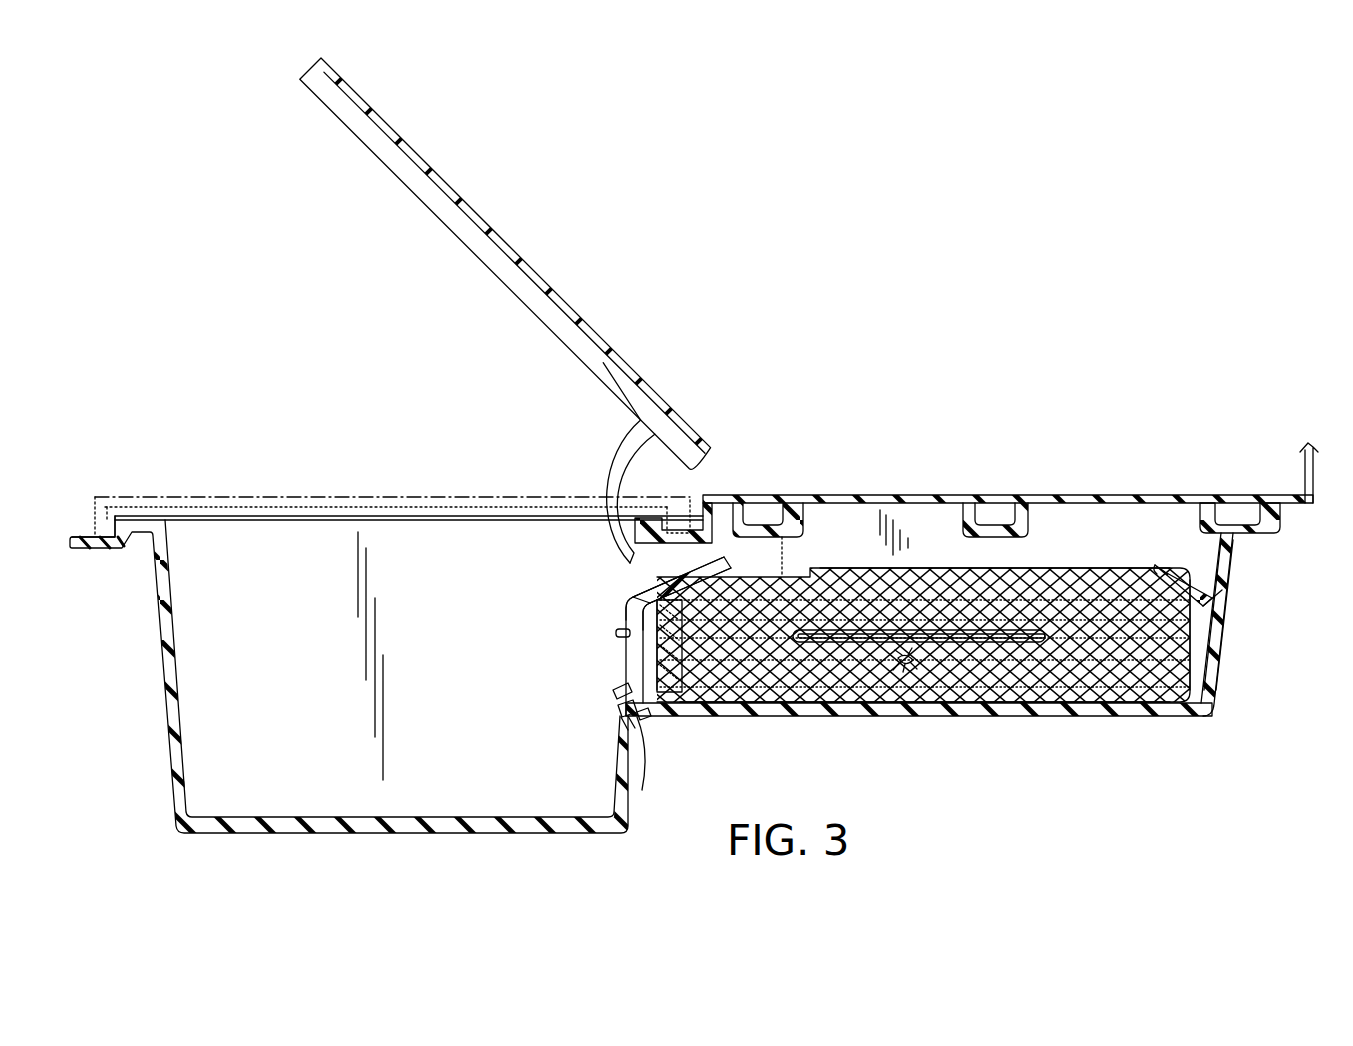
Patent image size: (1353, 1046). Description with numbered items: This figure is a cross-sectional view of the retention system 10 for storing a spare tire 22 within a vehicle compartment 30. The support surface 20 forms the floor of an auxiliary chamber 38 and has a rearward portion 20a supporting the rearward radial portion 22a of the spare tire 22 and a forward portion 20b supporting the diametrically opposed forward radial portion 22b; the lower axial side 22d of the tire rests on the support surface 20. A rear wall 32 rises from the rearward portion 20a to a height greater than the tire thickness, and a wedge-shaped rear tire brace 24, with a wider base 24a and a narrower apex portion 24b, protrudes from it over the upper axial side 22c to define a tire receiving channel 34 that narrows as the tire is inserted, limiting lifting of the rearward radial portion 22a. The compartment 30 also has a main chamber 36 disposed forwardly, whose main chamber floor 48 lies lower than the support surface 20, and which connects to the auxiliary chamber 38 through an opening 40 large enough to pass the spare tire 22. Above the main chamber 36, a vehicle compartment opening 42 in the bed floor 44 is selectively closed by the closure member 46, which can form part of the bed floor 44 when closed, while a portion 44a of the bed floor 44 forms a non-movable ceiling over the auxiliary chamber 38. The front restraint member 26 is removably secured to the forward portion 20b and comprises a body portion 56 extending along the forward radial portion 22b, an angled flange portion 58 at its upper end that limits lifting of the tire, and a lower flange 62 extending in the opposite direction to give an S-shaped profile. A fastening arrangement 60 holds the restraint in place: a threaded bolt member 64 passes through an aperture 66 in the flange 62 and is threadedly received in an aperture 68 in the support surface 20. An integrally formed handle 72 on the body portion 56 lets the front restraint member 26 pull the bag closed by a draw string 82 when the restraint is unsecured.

The retention system 10 is at (913, 528).
The support surface 20 is at (880, 697).
The rearward portion 20a is at (1168, 707).
The forward portion 20b is at (743, 697).
The spare tire 22 is at (1133, 567).
The rearward radial portion 22a is at (1187, 640).
The forward radial portion 22b is at (717, 667).
The upper axial side 22c is at (1110, 577).
The lower axial side 22d is at (1052, 703).
The rear tire brace 24 is at (1212, 569).
The wider base 24a is at (1227, 585).
The narrower apex portion 24b is at (1162, 567).
The front restraint member 26 is at (647, 652).
The vehicle compartment 30 is at (487, 550).
The rear wall 32 is at (1210, 657).
The tire receiving channel 34 is at (1202, 622).
The main chamber 36 is at (317, 780).
The auxiliary chamber 38 is at (853, 523).
The opening 40 is at (647, 592).
The vehicle compartment opening 42 is at (200, 527).
The bed floor 44 is at (820, 493).
The portion of the bed floor 44a is at (1008, 497).
The closure member 46 is at (490, 232).
The main chamber floor 48 is at (417, 817).
The body portion 56 is at (633, 610).
The flange portion 58 is at (707, 563).
The fastening arrangement 60 is at (610, 708).
The flange 62 is at (620, 710).
The threaded bolt member 64 is at (650, 766).
The aperture 66 is at (620, 717).
The aperture 68 is at (643, 720).
The handle 72 is at (617, 633).
The draw string 82 is at (948, 643).